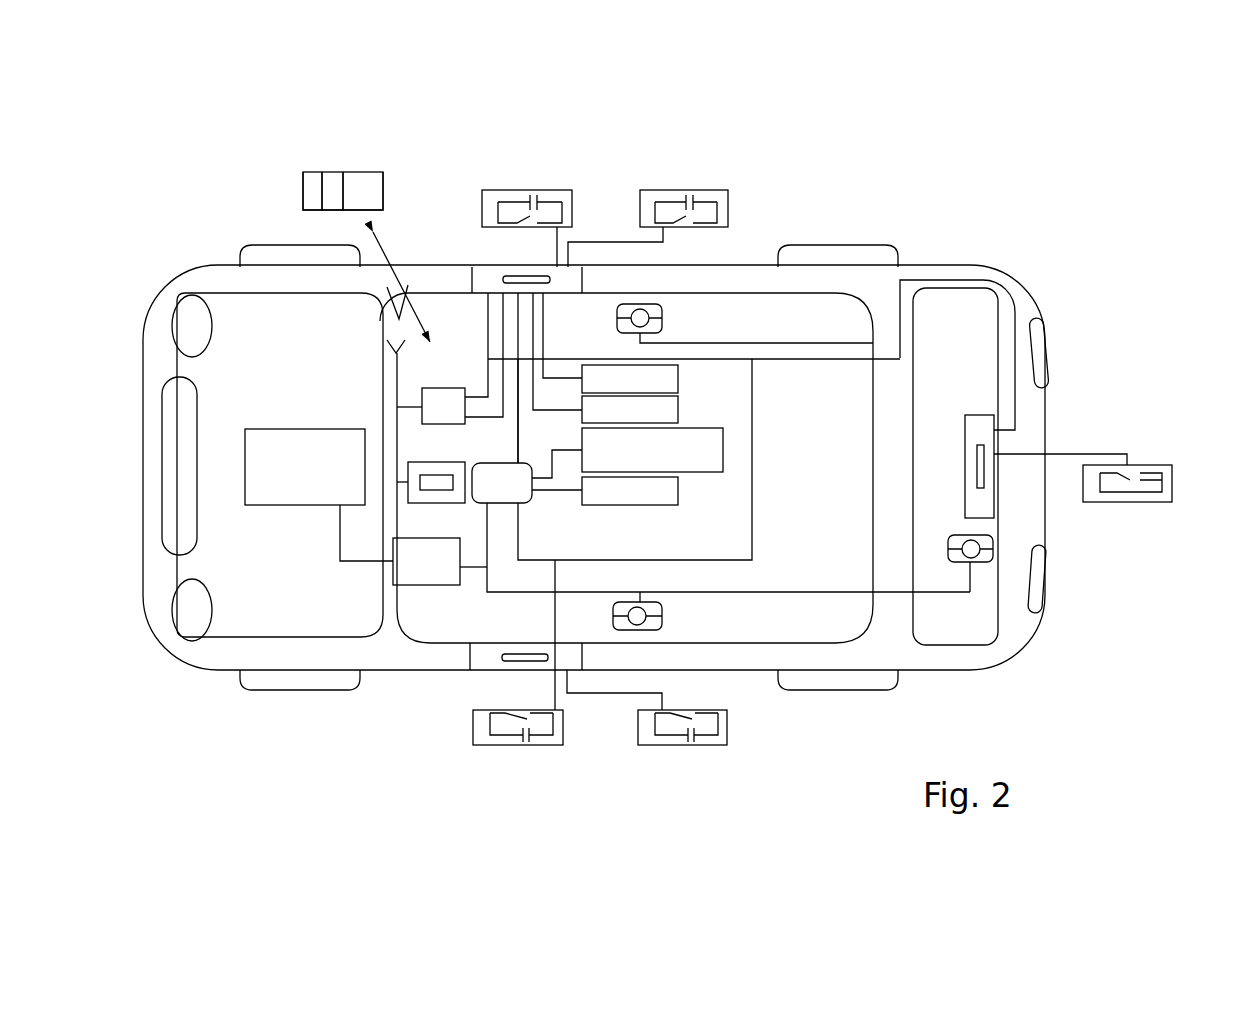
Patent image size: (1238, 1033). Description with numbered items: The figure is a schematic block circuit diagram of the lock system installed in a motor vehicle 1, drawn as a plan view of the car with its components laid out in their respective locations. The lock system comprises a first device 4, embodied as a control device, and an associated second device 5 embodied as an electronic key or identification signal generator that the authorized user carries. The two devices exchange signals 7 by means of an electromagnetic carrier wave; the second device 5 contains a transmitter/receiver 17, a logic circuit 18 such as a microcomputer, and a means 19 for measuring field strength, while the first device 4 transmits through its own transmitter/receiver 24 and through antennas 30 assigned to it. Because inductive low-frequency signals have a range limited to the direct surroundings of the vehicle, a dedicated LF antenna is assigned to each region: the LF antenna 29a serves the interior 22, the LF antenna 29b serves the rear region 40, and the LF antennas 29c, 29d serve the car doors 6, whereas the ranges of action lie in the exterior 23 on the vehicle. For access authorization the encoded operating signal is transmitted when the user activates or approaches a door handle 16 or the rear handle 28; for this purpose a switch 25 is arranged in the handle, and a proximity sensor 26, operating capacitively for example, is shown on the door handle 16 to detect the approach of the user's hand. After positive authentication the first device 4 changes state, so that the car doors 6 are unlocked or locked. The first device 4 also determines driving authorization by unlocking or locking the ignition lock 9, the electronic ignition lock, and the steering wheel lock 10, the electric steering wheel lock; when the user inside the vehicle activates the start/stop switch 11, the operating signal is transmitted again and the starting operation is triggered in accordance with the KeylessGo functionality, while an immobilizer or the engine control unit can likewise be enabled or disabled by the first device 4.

The motor vehicle 1 is at (908, 233).
The first device 4 is at (685, 517).
The second device 5 is at (298, 187).
The car door 6 is at (480, 267).
The signals 7 is at (424, 258).
The ignition lock 9 is at (449, 382).
The steering wheel lock 10 is at (480, 503).
The start/stop switch 11 is at (677, 363).
The door handle 16 is at (488, 199).
The transmitter/receiver 17 is at (360, 178).
The logic circuit 18 is at (310, 177).
The means for measuring the field strength 19 is at (332, 178).
The interior 22 is at (818, 420).
The exterior 23 is at (605, 198).
The transmitter/receiver 24 is at (322, 590).
The switch 25 is at (512, 717).
The proximity sensor 26 is at (527, 737).
The rear handle 28 is at (1150, 463).
The LF antenna 29a is at (401, 495).
The LF antenna 29b is at (988, 447).
The LF antenna 29c is at (483, 657).
The LF antenna 29d is at (563, 278).
The antenna 30 is at (393, 367).
The rear region 40 is at (965, 363).